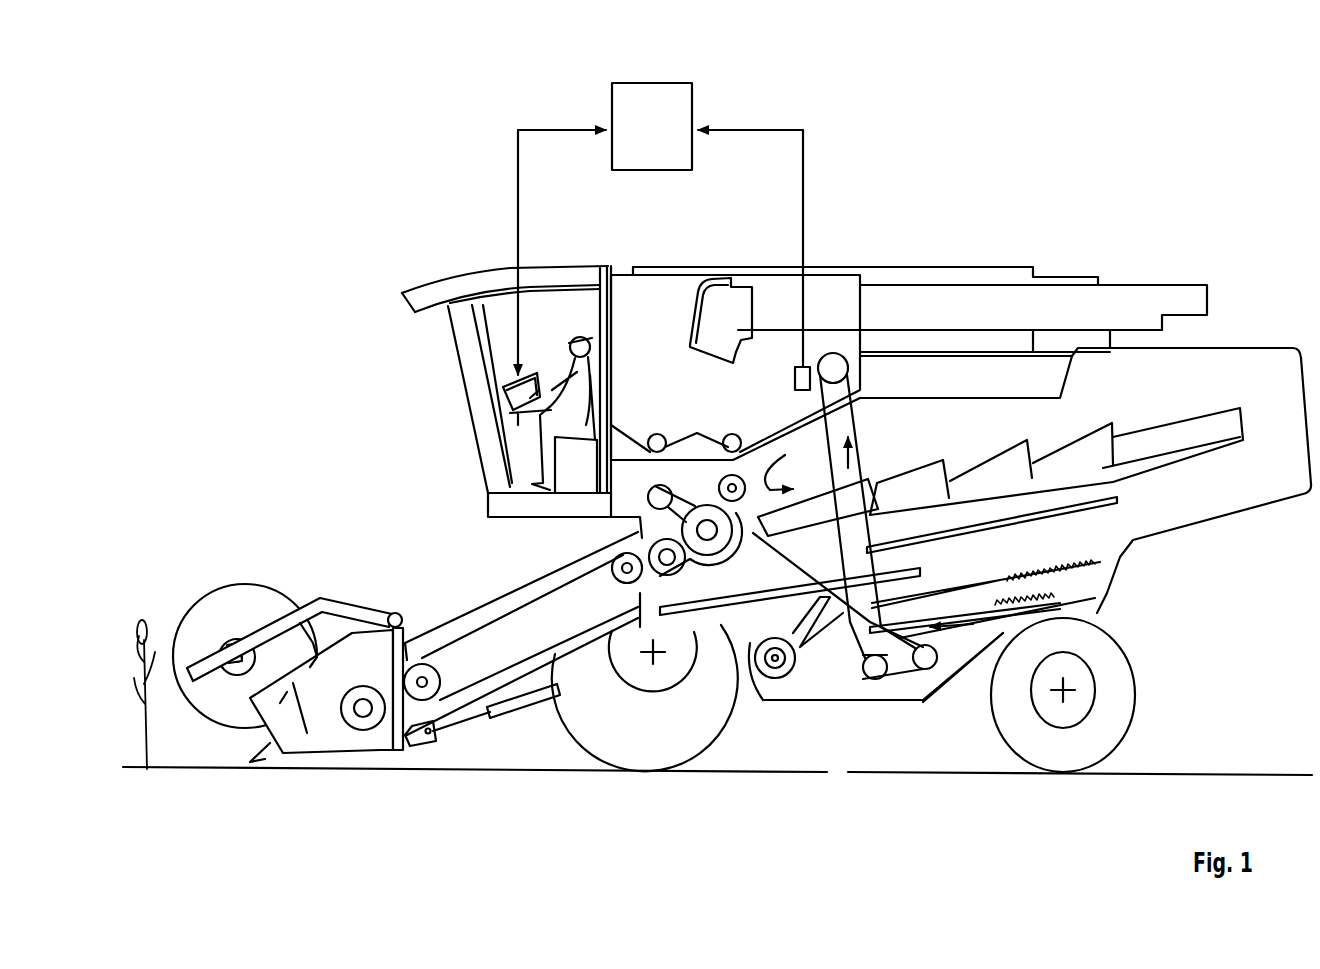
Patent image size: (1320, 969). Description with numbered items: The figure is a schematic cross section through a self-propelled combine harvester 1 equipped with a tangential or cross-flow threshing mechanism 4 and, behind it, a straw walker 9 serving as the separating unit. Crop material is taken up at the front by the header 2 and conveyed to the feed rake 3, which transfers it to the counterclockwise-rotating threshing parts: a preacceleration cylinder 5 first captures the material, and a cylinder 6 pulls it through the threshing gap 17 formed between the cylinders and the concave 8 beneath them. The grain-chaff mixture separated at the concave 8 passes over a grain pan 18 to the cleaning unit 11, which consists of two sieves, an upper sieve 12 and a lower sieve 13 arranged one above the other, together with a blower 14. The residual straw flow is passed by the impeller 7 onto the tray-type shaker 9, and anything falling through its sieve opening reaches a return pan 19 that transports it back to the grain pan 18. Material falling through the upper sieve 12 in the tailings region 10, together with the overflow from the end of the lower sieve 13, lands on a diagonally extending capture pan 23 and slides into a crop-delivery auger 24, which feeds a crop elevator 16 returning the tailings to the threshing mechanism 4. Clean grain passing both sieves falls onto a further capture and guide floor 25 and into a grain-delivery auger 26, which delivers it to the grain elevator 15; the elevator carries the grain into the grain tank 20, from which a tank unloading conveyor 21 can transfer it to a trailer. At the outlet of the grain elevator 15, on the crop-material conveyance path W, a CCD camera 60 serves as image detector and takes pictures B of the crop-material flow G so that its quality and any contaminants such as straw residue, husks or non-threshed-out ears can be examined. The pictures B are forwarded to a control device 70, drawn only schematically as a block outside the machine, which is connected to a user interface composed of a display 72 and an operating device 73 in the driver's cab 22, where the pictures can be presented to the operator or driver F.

The combine harvester 1 is at (396, 229).
The header 2 is at (229, 584).
The feed rake 3 is at (452, 620).
The threshing mechanism 4 is at (666, 527).
The preacceleration cylinder 5 is at (624, 552).
The cylinder 6 is at (704, 508).
The impeller 7 is at (729, 478).
The concave 8 is at (673, 615).
The straw walker 9 is at (1223, 423).
The tailings region 10 is at (1100, 587).
The cleaning unit 11 is at (1019, 569).
The upper sieve 12 is at (982, 592).
The lower sieve 13 is at (920, 630).
The blower 14 is at (778, 678).
The grain elevator 15 is at (860, 437).
The crop elevator 16 is at (770, 562).
The threshing gap 17 is at (690, 580).
The grain pan 18 is at (703, 595).
The return pan 19 is at (1117, 499).
The grain tank 20 is at (886, 363).
The tank unloading conveyor 21 is at (953, 303).
The driver's cab 22 is at (542, 300).
The capture pan 23 is at (977, 657).
The crop-delivery auger 24 is at (927, 673).
The capture and guide floor 25 is at (900, 668).
The grain-delivery auger 26 is at (873, 678).
The CCD camera 60 is at (795, 374).
The control device 70 is at (660, 229).
The display 72 is at (507, 394).
The operating device 73 is at (541, 392).
The pictures B is at (805, 200).
The operator or driver F is at (583, 337).
The crop-material flow G is at (814, 403).
The crop-material conveyance path W is at (846, 455).